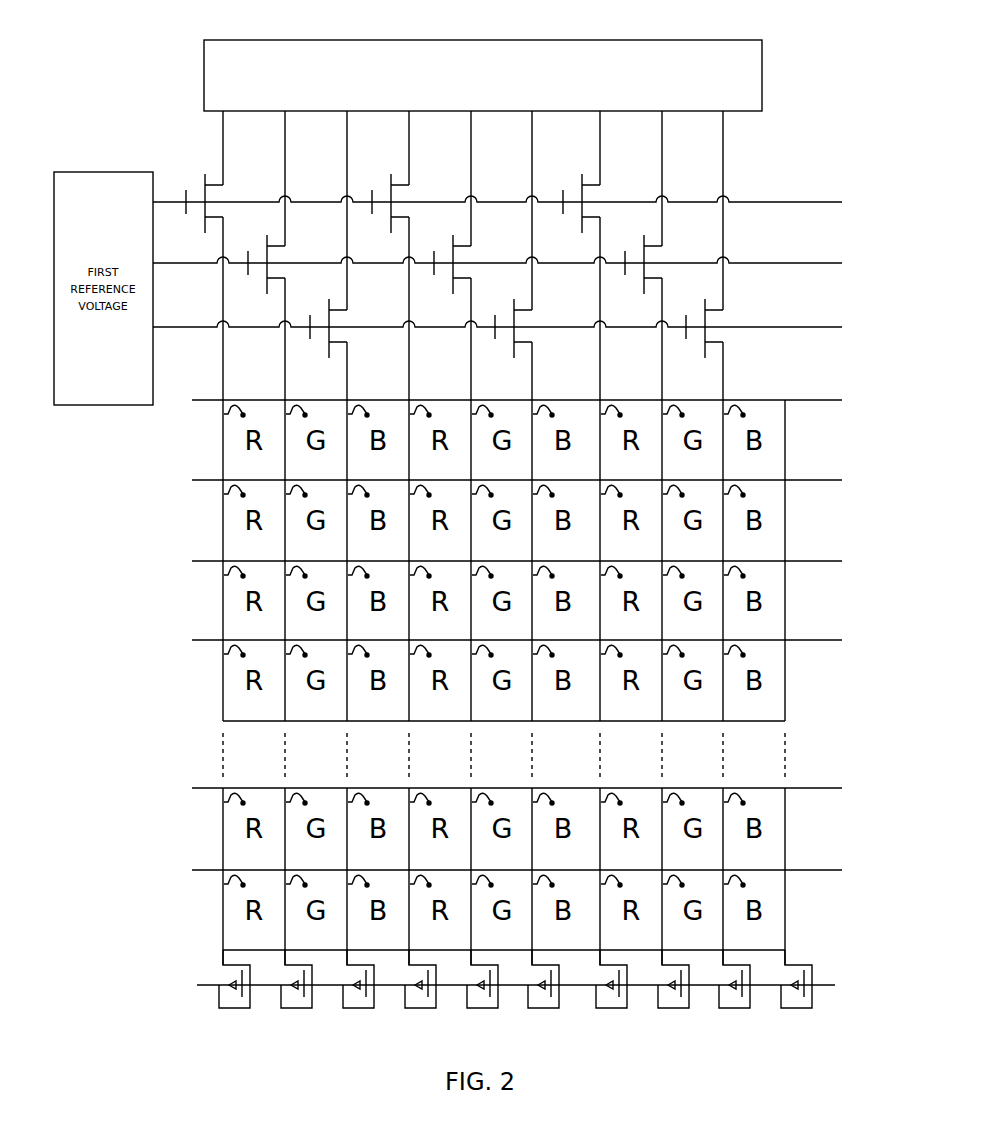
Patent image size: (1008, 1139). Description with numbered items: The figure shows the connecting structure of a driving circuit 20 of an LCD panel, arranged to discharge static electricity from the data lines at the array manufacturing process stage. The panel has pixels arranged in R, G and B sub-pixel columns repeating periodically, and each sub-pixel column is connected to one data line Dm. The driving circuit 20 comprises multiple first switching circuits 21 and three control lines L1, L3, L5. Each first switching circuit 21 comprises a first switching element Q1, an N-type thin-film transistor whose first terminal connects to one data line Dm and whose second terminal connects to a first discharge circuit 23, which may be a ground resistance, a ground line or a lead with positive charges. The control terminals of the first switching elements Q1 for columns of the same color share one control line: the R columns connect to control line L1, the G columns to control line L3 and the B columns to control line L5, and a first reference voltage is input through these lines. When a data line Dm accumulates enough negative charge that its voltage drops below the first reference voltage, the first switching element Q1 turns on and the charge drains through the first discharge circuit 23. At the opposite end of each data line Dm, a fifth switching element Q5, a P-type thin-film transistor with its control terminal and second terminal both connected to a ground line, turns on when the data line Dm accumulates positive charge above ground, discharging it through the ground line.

The driving circuit 20 is at (739, 171).
The first switching circuit 21 is at (204, 184).
The first discharge circuit 23 is at (533, 40).
The data line Dm is at (222, 537).
The first switching element Q1 is at (191, 209).
The fifth switching element Q5 is at (249, 979).
The control line L1 is at (516, 204).
The control line L3 is at (516, 266).
The control line L5 is at (516, 329).